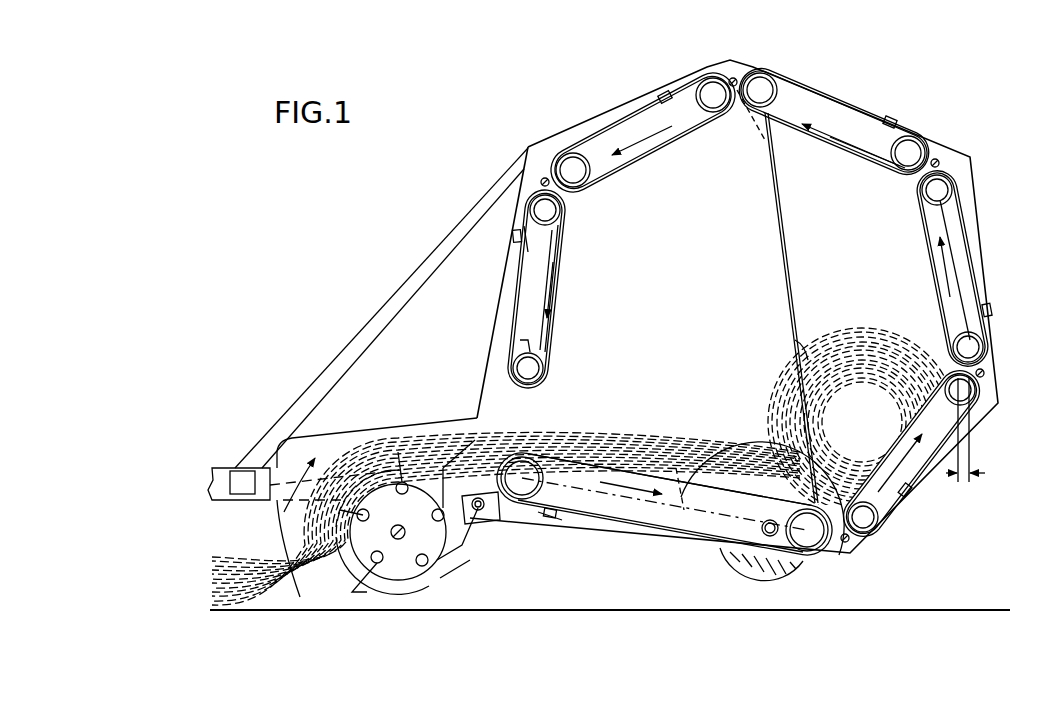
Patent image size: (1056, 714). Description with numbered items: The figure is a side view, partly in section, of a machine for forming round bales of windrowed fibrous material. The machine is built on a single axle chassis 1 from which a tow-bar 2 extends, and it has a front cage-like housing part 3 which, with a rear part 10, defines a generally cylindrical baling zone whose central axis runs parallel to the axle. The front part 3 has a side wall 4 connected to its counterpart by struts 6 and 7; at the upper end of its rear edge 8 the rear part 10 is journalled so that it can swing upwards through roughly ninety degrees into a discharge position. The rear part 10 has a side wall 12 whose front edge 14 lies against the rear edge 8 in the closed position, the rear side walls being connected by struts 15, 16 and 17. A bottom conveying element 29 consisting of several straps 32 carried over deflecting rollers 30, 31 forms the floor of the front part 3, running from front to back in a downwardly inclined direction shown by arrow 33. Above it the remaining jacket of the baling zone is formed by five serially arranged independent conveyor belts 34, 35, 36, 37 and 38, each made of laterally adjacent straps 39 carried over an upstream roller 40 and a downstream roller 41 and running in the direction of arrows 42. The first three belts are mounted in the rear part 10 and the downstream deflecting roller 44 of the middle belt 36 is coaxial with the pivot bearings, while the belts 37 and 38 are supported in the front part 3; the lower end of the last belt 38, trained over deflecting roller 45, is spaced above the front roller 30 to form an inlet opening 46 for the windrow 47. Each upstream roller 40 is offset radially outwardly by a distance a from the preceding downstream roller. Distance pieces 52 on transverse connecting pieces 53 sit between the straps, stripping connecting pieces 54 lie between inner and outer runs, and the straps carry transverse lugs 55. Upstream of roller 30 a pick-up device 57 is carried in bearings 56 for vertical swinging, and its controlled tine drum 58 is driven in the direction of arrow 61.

The single axle chassis 1 is at (480, 500).
The tow-bar 2 is at (215, 468).
The front housing part 3 is at (678, 280).
The side wall 4 is at (590, 132).
The strut 6 is at (538, 180).
The strut 7 is at (733, 77).
The rear edge 8 is at (795, 335).
The rear part 10 is at (876, 330).
The side wall 12 is at (785, 220).
The front edge 14 is at (790, 258).
The strut 15 is at (940, 160).
The strut 16 is at (987, 372).
The strut 17 is at (850, 545).
The conveying element 29 is at (680, 488).
The front deflecting roller 30 is at (545, 478).
The deflecting roller 31 is at (812, 555).
The straps 32 is at (612, 455).
The arrow 33 is at (637, 523).
The conveyor belt 34 is at (926, 450).
The conveyor belt 35 is at (978, 228).
The conveyor belt 36 is at (850, 117).
The conveyor belt 37 is at (650, 118).
The conveyor belt 38 is at (532, 278).
The straps 39 is at (930, 258).
The upstream roller 40 is at (721, 113).
The downstream roller 41 is at (555, 158).
The arrows 42 is at (830, 135).
The deflecting roller 44 is at (780, 80).
The deflecting roller 45 is at (548, 372).
The inlet opening 46 is at (522, 416).
The windrow 47 is at (566, 446).
The distance pieces 52 is at (525, 245).
The transverse connecting pieces 53 is at (512, 233).
The stripping connecting pieces 54 is at (520, 336).
The transverse lugs 55 is at (760, 480).
The bearings 56 is at (484, 522).
The pick-up device 57 is at (345, 560).
The controlled tine drum 58 is at (407, 562).
The arrow 61 is at (280, 505).
The distance a is at (973, 430).